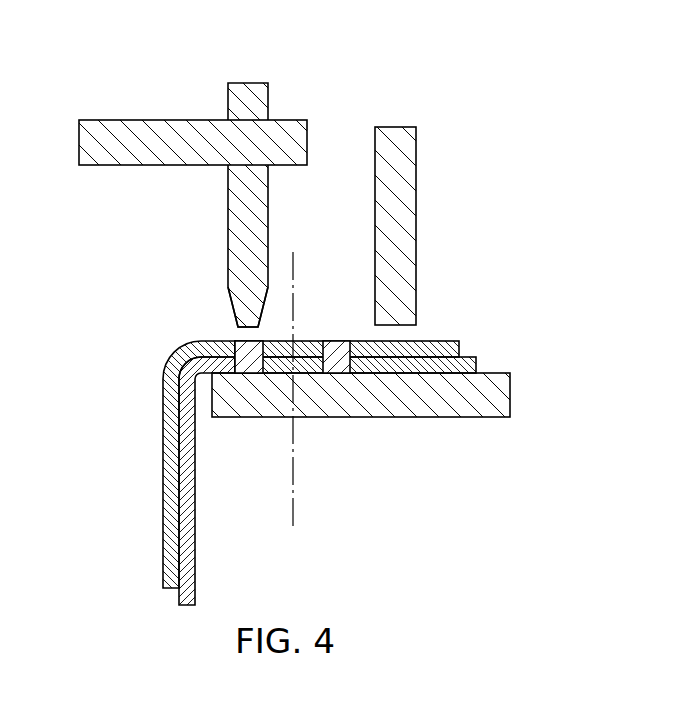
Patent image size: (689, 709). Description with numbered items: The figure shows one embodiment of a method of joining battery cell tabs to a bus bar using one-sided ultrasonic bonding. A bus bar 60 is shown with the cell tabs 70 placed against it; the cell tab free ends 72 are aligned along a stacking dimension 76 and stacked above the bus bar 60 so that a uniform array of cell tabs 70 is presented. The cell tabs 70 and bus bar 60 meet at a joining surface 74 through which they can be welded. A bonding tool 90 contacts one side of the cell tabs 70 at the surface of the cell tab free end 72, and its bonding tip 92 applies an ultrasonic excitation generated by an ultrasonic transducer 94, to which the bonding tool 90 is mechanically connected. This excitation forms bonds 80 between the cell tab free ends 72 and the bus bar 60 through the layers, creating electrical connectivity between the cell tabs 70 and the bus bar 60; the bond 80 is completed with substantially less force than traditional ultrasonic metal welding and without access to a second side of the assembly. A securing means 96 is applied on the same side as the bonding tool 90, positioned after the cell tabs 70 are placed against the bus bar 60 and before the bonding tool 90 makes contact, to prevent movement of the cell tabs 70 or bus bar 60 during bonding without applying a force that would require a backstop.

The bus bar 60 is at (517, 390).
The cell tabs 70 is at (155, 480).
The cell tab free ends 72 is at (297, 340).
The joining surface 74 is at (476, 370).
The stacking dimension 76 is at (302, 482).
The bonds 80 is at (343, 333).
The bonding tool 90 is at (218, 230).
The bonding tip 92 is at (240, 326).
The ultrasonic transducer 94 is at (132, 110).
The securing means 96 is at (425, 157).